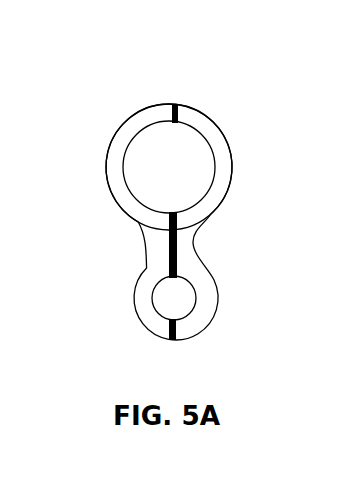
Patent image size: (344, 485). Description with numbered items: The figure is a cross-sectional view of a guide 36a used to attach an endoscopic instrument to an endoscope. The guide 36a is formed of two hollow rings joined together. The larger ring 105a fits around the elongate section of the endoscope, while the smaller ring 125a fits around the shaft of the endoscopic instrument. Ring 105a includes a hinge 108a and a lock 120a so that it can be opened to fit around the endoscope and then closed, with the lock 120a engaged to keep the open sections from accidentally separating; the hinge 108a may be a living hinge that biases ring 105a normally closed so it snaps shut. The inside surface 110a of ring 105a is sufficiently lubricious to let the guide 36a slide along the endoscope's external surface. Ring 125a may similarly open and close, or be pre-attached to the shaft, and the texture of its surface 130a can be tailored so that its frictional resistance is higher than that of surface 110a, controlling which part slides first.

The guide 36a is at (242, 97).
The ring 105a is at (121, 156).
The inside surface 110a is at (124, 184).
The hinge 108a is at (166, 224).
The lock 120a is at (175, 105).
The ring 125a is at (152, 296).
The surface 130a is at (173, 322).